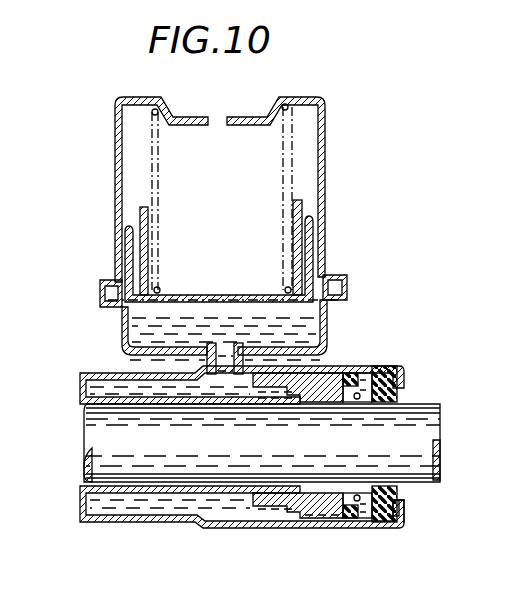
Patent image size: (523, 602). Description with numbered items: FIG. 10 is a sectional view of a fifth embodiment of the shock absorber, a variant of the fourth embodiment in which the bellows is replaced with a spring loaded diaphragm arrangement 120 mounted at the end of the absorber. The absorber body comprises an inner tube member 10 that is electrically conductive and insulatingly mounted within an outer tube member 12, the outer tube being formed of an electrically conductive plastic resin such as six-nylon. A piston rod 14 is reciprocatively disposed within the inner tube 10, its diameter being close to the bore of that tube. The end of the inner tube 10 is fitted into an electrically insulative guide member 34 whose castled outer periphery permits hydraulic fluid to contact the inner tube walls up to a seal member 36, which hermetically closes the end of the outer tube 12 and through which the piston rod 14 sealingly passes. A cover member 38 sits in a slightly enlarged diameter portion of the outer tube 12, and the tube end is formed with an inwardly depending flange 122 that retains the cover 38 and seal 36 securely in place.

The spring loaded diaphragm arrangement 120 is at (115, 172).
The outer tube member 12 is at (100, 376).
The inner tube member 10 is at (83, 404).
The piston rod 14 is at (103, 448).
The guide member 34 is at (292, 497).
The seal member 36 is at (368, 510).
The cover member 38 is at (394, 512).
The inwardly depending flange 122 is at (407, 503).